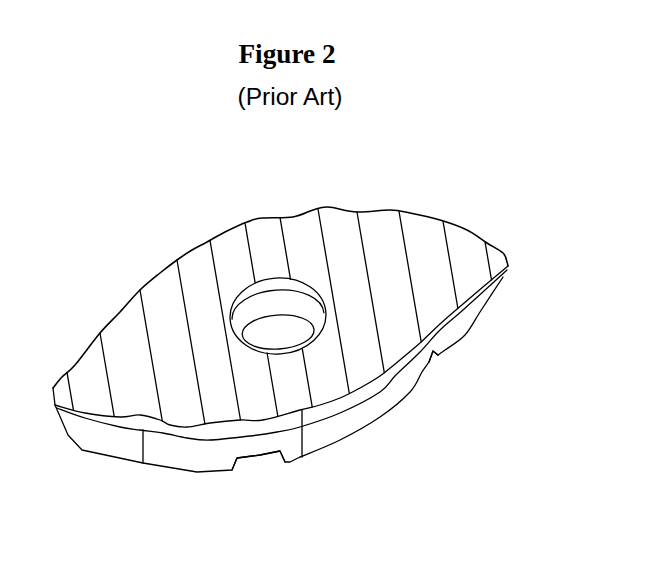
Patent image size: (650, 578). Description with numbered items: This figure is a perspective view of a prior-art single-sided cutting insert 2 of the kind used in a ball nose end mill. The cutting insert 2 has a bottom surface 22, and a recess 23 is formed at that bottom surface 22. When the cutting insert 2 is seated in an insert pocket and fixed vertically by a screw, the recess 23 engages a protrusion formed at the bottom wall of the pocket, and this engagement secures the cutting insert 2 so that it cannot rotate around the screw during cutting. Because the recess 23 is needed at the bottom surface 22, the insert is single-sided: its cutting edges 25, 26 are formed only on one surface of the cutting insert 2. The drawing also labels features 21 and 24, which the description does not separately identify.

The cutting insert 2 is at (280, 339).
The rake face 21 is at (298, 241).
The bottom surface 22 is at (195, 473).
The recess 23 is at (262, 456).
The through hole 24 is at (265, 306).
The cutting edge 25 is at (378, 378).
The cutting edge 26 is at (327, 207).